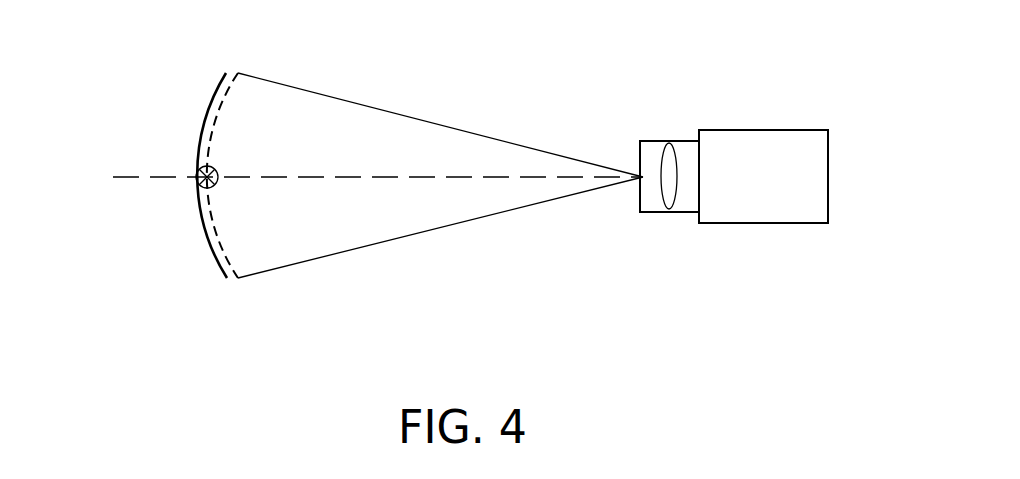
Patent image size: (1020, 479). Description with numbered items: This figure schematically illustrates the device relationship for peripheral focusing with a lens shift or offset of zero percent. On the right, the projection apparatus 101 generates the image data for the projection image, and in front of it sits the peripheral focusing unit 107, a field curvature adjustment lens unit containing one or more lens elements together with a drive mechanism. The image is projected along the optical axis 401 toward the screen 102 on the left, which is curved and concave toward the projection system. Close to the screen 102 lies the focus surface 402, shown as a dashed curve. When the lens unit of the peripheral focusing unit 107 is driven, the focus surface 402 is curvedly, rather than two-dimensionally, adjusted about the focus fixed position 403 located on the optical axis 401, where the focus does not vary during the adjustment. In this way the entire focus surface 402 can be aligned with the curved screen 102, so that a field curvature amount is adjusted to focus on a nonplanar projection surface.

The projection apparatus 101 is at (828, 195).
The peripheral focusing unit 107 is at (673, 204).
The screen 102 is at (198, 137).
The optical axis 401 is at (118, 177).
The focus surface 402 is at (230, 255).
The focus fixed position 403 is at (199, 187).